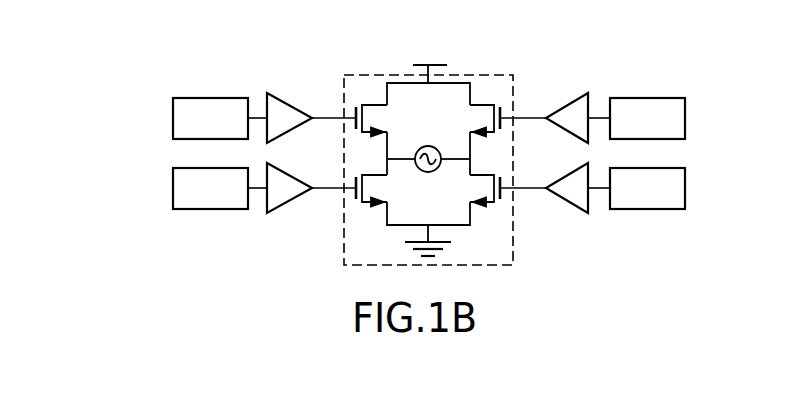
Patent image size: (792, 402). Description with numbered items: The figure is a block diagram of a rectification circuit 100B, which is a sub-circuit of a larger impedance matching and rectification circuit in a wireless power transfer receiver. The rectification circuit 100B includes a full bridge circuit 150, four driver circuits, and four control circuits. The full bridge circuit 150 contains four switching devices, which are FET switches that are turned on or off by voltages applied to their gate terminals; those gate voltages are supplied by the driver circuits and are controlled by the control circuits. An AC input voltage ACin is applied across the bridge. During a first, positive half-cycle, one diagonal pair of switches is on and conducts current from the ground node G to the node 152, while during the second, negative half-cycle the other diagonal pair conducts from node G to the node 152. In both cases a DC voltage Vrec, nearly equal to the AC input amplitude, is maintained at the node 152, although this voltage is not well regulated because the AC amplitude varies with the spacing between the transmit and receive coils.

The rectification circuit 100B is at (211, 50).
The full bridge circuit 150 is at (513, 95).
The node 152 is at (437, 71).